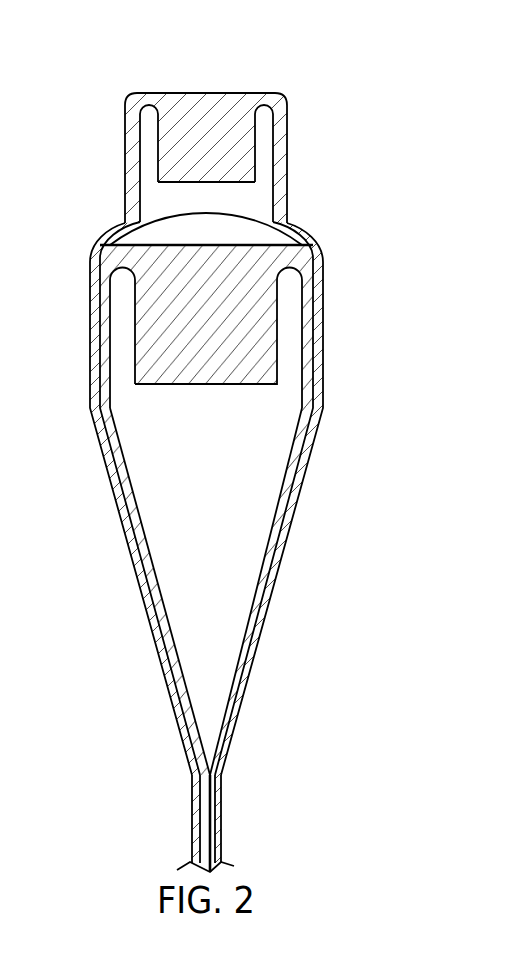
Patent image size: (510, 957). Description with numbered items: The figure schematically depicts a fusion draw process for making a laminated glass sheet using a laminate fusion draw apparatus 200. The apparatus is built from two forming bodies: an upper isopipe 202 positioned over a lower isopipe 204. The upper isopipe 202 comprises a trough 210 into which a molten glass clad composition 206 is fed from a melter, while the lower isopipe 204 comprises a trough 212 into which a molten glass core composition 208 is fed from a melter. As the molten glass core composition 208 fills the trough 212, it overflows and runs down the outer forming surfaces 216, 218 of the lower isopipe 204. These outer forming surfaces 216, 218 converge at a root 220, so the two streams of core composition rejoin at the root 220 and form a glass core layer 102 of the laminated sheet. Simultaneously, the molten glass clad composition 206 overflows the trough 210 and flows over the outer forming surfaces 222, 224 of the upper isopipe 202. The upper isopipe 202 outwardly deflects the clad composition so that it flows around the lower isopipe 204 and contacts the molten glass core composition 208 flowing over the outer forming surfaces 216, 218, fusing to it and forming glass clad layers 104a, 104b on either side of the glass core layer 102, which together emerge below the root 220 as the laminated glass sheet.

The laminate fusion draw apparatus 200 is at (316, 82).
The upper isopipe 202 is at (258, 112).
The lower isopipe 204 is at (293, 309).
The molten glass clad composition 206 is at (204, 97).
The molten glass core composition 208 is at (264, 262).
The trough 210 is at (158, 148).
The trough 212 is at (135, 338).
The outer forming surface 216 is at (281, 472).
The outer forming surface 218 is at (124, 453).
The root 220 is at (208, 720).
The outer forming surface 222 is at (142, 192).
The outer forming surface 224 is at (280, 164).
The glass core layer 102 is at (208, 777).
The glass clad layer 104a is at (200, 825).
The glass clad layer 104b is at (221, 817).